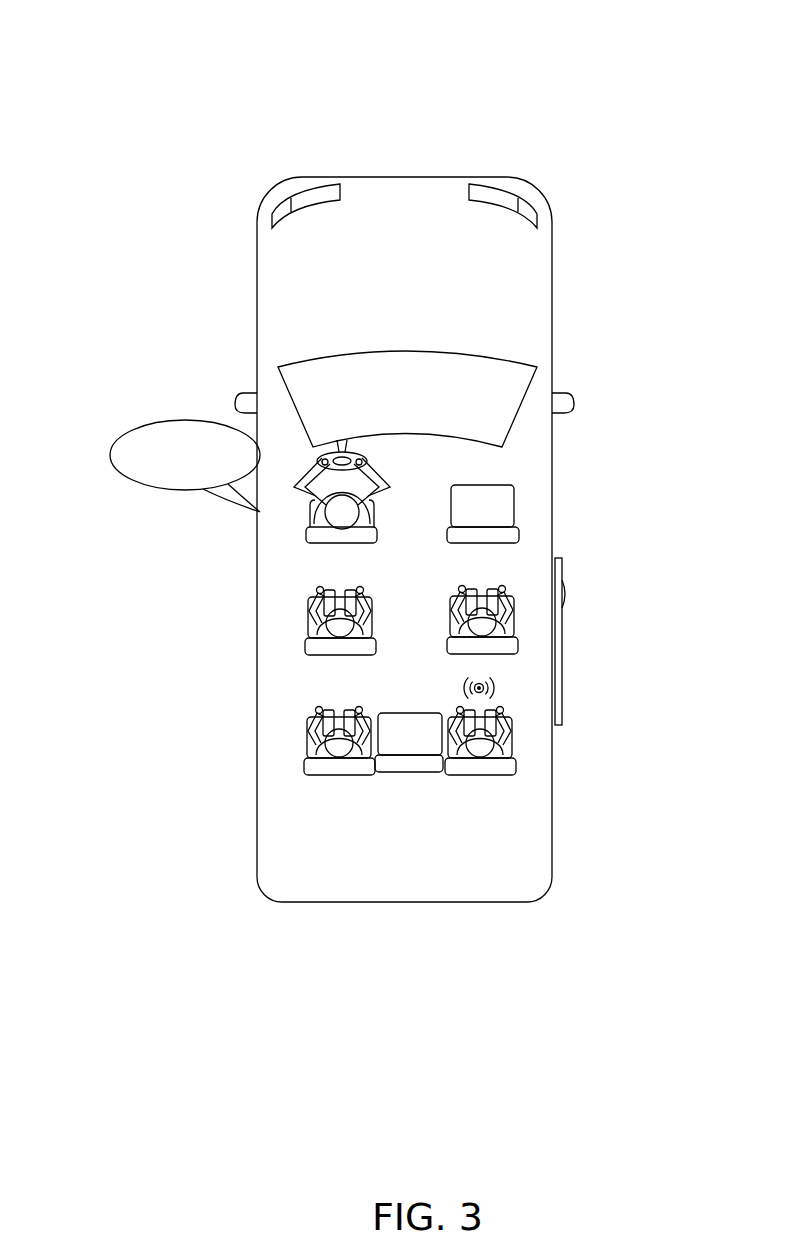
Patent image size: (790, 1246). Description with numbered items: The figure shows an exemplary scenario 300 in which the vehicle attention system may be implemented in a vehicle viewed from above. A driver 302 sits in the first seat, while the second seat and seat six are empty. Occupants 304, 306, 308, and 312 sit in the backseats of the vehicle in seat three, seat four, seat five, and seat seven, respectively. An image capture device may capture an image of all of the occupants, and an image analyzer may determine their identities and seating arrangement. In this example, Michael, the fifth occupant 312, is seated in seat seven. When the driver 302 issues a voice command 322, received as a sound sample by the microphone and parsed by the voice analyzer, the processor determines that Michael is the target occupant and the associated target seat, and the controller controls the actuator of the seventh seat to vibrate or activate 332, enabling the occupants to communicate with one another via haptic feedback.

The exemplary scenario 300 is at (185, 78).
The driver 302 is at (310, 538).
The occupant 304 is at (341, 625).
The occupant 306 is at (483, 625).
The occupant 308 is at (340, 745).
The fifth occupant 312 is at (481, 745).
The voice command 322 is at (160, 418).
The actuator activation 332 is at (495, 687).